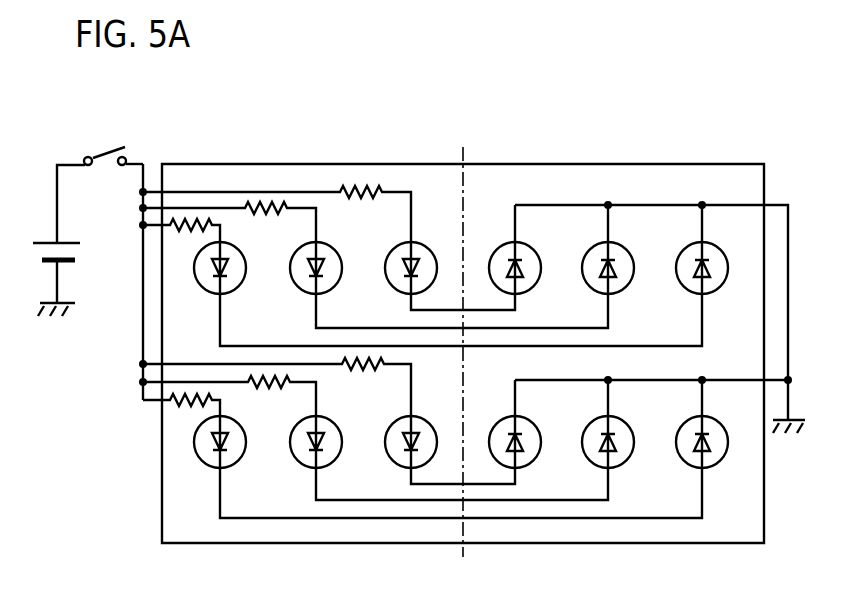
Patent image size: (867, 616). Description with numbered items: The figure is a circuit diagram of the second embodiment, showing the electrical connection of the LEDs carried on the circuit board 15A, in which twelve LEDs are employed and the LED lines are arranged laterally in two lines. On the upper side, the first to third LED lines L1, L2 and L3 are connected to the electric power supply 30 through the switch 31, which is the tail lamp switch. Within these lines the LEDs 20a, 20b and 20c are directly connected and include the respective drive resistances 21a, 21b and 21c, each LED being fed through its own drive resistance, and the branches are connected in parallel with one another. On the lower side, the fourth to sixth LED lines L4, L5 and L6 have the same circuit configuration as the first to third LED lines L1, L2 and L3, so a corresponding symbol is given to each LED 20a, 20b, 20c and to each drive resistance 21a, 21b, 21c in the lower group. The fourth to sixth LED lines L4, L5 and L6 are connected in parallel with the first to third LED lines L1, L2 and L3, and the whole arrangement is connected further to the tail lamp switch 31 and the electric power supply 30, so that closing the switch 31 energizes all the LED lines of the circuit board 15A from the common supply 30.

The circuit board 15A is at (748, 512).
The LED 20a is at (428, 246).
The LED 20b is at (310, 246).
The LED 20c is at (232, 246).
The drive resistance 21a is at (366, 195).
The drive resistance 21b is at (278, 213).
The drive resistance 21c is at (175, 236).
The electric power supply 30 is at (48, 240).
The switch 31 is at (106, 150).
The first LED line L1 is at (530, 200).
The second LED line L2 is at (620, 200).
The third LED line L3 is at (718, 196).
The fourth LED line L4 is at (548, 482).
The fifth LED line L5 is at (640, 490).
The sixth LED line L6 is at (722, 520).